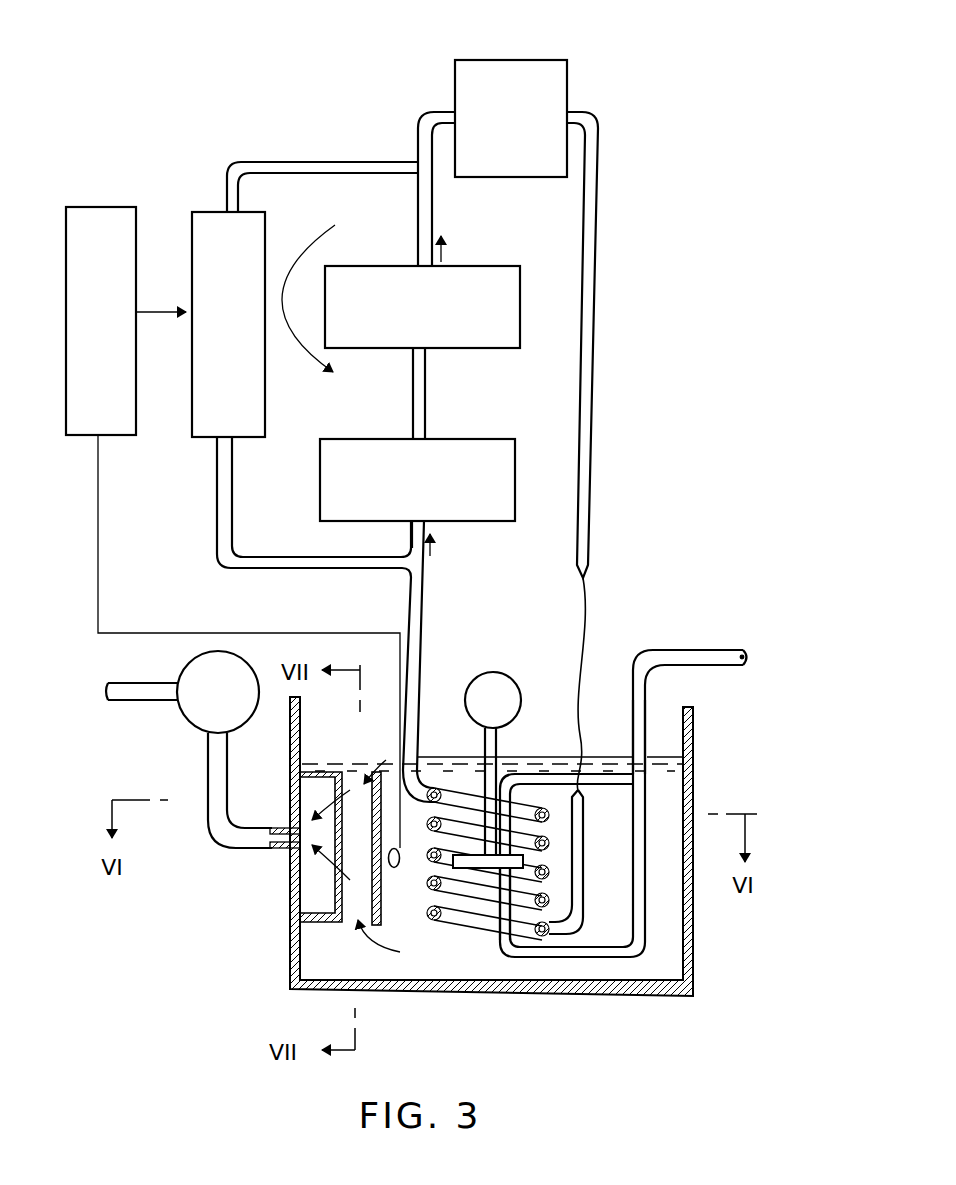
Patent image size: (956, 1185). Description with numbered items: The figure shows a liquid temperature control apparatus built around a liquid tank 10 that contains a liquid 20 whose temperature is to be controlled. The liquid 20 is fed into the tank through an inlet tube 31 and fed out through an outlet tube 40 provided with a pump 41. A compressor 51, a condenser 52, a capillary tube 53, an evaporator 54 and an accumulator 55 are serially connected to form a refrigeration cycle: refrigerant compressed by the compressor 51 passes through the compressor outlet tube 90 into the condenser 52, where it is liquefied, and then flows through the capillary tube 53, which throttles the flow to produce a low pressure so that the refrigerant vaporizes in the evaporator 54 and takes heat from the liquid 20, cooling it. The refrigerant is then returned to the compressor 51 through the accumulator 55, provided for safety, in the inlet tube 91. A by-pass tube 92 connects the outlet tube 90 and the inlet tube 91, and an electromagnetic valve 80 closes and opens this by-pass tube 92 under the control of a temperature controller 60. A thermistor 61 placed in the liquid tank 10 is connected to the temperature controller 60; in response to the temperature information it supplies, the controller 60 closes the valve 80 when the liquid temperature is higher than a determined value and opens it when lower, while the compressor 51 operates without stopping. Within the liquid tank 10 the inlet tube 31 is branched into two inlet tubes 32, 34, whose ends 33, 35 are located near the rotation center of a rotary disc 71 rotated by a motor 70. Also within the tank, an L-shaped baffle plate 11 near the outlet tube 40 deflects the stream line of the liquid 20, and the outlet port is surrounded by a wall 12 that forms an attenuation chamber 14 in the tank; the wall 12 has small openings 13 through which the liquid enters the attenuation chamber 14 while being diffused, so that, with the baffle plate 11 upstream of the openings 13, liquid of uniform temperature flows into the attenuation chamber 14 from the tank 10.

The liquid tank 10 is at (695, 768).
The baffle plate 11 is at (382, 925).
The wall 12 is at (345, 902).
The small openings 13 is at (352, 874).
The attenuation chamber 14 is at (318, 915).
The liquid 20 is at (663, 935).
The inlet tube 31 is at (705, 650).
The branched inlet tube 32 is at (546, 773).
The end of branched inlet tube 33 is at (512, 853).
The branched inlet tube 34 is at (598, 953).
The end of branched inlet tube 35 is at (497, 872).
The outlet tube 40 is at (208, 756).
The pump 41 is at (184, 667).
The compressor 51 is at (494, 266).
The condenser 52 is at (510, 60).
The capillary tube 53 is at (590, 597).
The evaporator 54 is at (466, 915).
The accumulator 55 is at (482, 439).
The temperature controller 60 is at (107, 207).
The thermistor 61 is at (397, 863).
The motor 70 is at (500, 672).
The rotary disc 71 is at (510, 870).
The electromagnetic valve 80 is at (205, 212).
The outlet tube 90 is at (418, 132).
The inlet tube 91 is at (425, 565).
The by-pass tube 92 is at (298, 160).